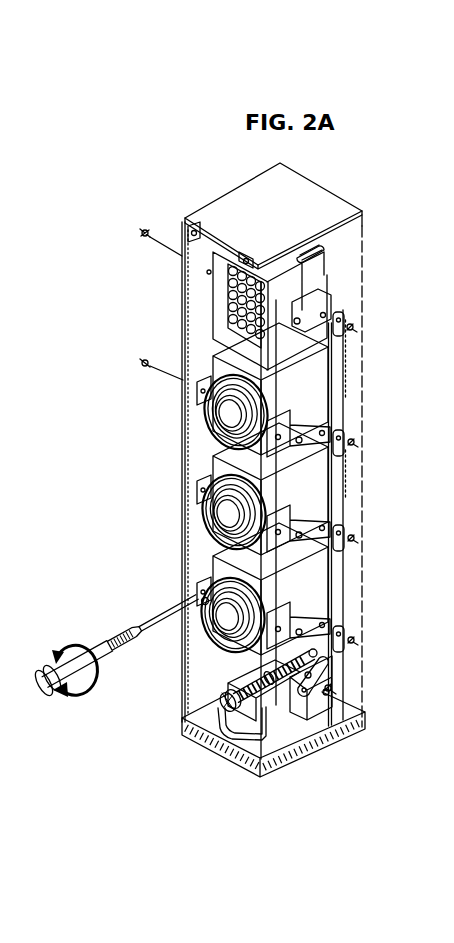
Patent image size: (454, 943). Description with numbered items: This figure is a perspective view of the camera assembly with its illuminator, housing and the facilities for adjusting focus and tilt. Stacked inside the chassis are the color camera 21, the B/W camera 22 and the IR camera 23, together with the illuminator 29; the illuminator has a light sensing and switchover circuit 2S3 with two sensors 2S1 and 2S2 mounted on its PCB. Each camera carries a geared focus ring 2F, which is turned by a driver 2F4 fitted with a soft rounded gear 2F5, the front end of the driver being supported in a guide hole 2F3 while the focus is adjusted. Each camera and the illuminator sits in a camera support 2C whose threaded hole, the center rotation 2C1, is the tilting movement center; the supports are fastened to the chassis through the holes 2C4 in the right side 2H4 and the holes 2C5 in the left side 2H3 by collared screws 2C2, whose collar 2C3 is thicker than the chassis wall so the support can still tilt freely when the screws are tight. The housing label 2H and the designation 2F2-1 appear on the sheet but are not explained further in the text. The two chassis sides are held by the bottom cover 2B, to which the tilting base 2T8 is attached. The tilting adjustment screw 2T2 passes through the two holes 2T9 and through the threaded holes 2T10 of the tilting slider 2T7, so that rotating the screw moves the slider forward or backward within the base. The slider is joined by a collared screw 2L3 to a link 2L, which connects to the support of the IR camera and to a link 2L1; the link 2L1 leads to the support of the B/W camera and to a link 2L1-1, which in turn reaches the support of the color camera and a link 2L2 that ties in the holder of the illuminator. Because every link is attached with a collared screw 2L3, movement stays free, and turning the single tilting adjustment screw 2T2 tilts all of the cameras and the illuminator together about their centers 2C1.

The sensor 2S1 is at (193, 226).
The sensor 2S2 is at (245, 256).
The light sensing and switchover circuit 2S3 is at (337, 197).
The head housing 2H is at (408, 227).
The left side chassis 2H3 is at (193, 297).
The right side chassis 2H4 is at (348, 242).
The center rotation 2C1 is at (300, 306).
The collared screw 2C2 is at (142, 231).
The collar 2C3 is at (145, 229).
The hole 2C4 is at (313, 304).
The hole 2C5 is at (206, 270).
The camera support 2C is at (316, 298).
The illuminator 29 is at (232, 284).
The color camera 21 is at (228, 368).
The B/W camera 22 is at (214, 462).
The IR camera 23 is at (214, 580).
The geared focus ring 2F is at (222, 418).
The guide hole 2F3 is at (210, 388).
The driver 2F4 is at (100, 650).
The soft rounded gear 2F5 is at (196, 604).
The focus element 2F2-1 is at (439, 601).
The link 2L is at (341, 653).
The link 2L1 is at (338, 558).
The link 2L1-1 is at (340, 472).
The link 2L2 is at (340, 368).
The collared screw 2L3 is at (351, 333).
The tilting adjustment screw 2T2 is at (224, 700).
The tilting slider 2T7 is at (318, 706).
The tilting base 2T8 is at (245, 724).
The hole 2T9 is at (336, 682).
The threaded hole 2T10 is at (276, 686).
The bottom cover 2B is at (275, 767).